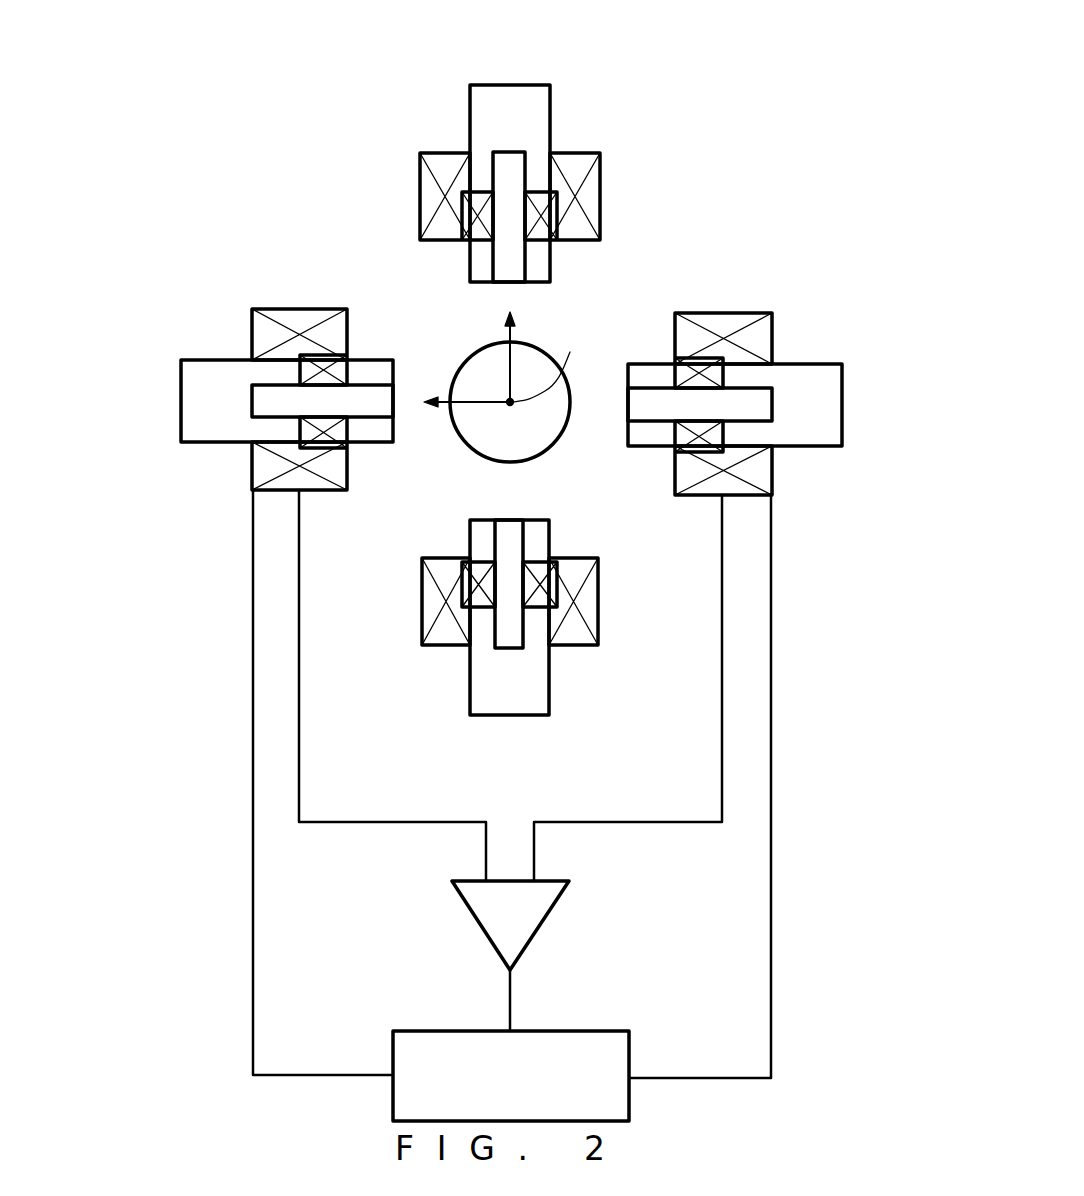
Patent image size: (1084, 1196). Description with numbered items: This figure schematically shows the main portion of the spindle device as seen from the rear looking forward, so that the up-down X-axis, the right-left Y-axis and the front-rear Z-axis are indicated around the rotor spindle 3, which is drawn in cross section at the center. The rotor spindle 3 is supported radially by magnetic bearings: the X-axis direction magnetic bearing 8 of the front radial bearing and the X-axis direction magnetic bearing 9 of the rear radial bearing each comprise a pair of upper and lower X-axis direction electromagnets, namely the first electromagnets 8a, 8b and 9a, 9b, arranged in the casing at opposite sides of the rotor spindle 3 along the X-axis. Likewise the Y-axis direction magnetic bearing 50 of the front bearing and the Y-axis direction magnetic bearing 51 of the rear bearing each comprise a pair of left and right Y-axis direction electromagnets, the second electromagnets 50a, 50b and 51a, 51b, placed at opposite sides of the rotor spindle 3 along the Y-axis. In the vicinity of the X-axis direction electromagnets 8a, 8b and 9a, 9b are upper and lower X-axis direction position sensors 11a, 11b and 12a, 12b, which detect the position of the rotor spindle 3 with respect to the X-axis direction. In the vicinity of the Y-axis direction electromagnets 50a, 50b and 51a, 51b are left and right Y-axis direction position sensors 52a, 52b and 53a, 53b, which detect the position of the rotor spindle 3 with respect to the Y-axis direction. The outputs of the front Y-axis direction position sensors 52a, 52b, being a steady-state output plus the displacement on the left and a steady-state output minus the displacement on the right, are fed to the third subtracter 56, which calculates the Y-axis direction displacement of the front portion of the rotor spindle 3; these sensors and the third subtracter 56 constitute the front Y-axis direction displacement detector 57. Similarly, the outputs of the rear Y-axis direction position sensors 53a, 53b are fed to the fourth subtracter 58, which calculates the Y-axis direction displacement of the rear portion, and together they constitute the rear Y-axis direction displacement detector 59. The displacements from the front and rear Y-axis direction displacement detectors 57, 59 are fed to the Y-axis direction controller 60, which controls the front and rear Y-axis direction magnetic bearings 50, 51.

The rotor spindle 3 is at (551, 451).
The X-axis direction magnetic bearing 8 is at (585, 141).
The X-axis direction magnetic bearing 9 is at (585, 141).
The X-axis direction electromagnet 8a is at (488, 85).
The X-axis direction electromagnet 9a is at (468, 141).
The X-axis direction electromagnet 8b is at (470, 700).
The X-axis direction electromagnet 9b is at (444, 648).
The X-axis direction position sensor 11a is at (520, 152).
The X-axis direction position sensor 12a is at (638, 201).
The X-axis direction position sensor 11b is at (513, 648).
The X-axis direction position sensor 12b is at (592, 649).
The Y-axis direction magnetic bearing 50 is at (225, 399).
The Y-axis direction magnetic bearing 51 is at (225, 399).
The Y-axis direction electromagnet 50a is at (188, 442).
The Y-axis direction electromagnet 51a is at (225, 461).
The Y-axis direction electromagnet 50b is at (817, 447).
The Y-axis direction electromagnet 51b is at (789, 466).
The Y-axis direction position sensor 52a is at (272, 385).
The Y-axis direction position sensor 53a is at (295, 363).
The Y-axis direction position sensor 52b is at (745, 387).
The Y-axis direction position sensor 53b is at (742, 367).
The third subtracter 56 is at (464, 907).
The fourth subtracter 58 is at (499, 935).
The front Y-axis direction displacement detector 57 is at (499, 935).
The rear Y-axis direction displacement detector 59 is at (499, 935).
The Y-axis direction controller 60 is at (629, 1063).